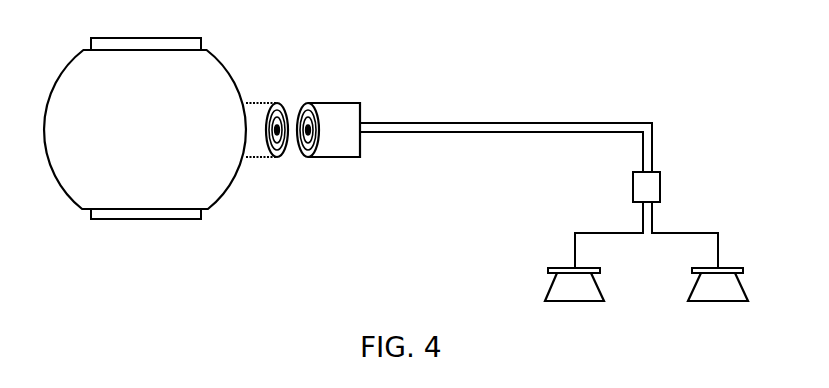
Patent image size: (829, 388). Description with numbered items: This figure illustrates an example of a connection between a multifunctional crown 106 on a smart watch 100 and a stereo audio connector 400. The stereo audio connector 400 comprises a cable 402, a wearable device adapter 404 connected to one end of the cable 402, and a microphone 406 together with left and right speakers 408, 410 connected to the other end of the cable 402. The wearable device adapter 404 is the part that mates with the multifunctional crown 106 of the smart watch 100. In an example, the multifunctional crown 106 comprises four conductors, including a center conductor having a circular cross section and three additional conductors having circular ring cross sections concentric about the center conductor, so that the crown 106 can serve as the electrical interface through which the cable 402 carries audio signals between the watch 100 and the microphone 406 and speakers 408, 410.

The smart watch 100 is at (226, 49).
The multifunctional crown 106 is at (256, 103).
The stereo audio connector 400 is at (539, 207).
The cable 402 is at (473, 134).
The wearable device adapter 404 is at (334, 158).
The microphone 406 is at (633, 187).
The left speaker 408 is at (562, 268).
The right speaker 410 is at (728, 268).